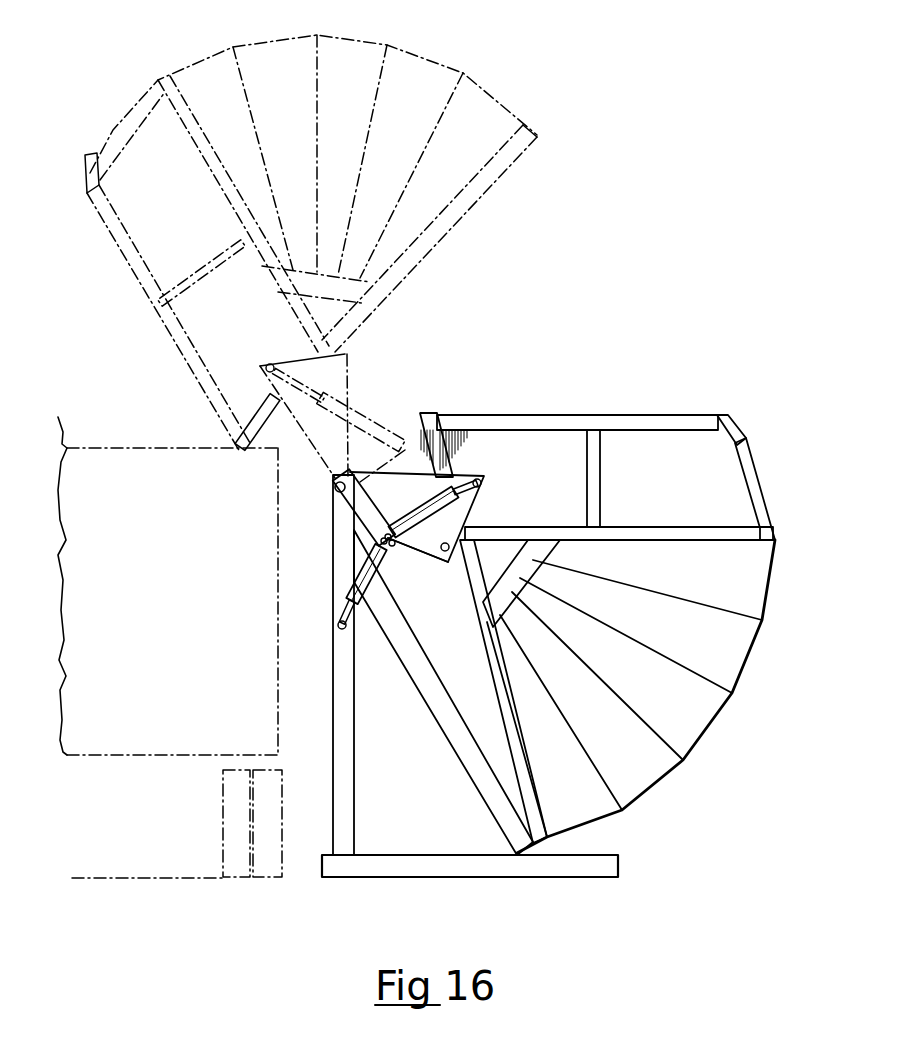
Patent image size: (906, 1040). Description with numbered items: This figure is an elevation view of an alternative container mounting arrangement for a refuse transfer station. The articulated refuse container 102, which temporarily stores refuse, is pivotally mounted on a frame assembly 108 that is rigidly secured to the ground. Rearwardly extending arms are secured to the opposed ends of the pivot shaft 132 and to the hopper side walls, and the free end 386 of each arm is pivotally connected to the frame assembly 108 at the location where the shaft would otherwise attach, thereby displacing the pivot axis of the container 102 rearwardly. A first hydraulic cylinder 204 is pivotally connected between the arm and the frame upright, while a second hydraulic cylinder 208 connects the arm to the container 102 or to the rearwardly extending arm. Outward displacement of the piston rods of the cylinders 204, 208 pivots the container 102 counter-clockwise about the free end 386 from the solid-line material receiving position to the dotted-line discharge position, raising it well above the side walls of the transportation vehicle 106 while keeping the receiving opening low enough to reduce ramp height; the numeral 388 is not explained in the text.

The articulated refuse container 102 is at (686, 795).
The transportation vehicle 106 is at (162, 636).
The frame assembly 108 is at (364, 730).
The pivot shaft 132 is at (415, 553).
The first hydraulic cylinder 204 is at (372, 587).
The second hydraulic cylinder 208 is at (450, 506).
The free end of arm 386 is at (360, 485).
The mounting plate 388 is at (428, 485).